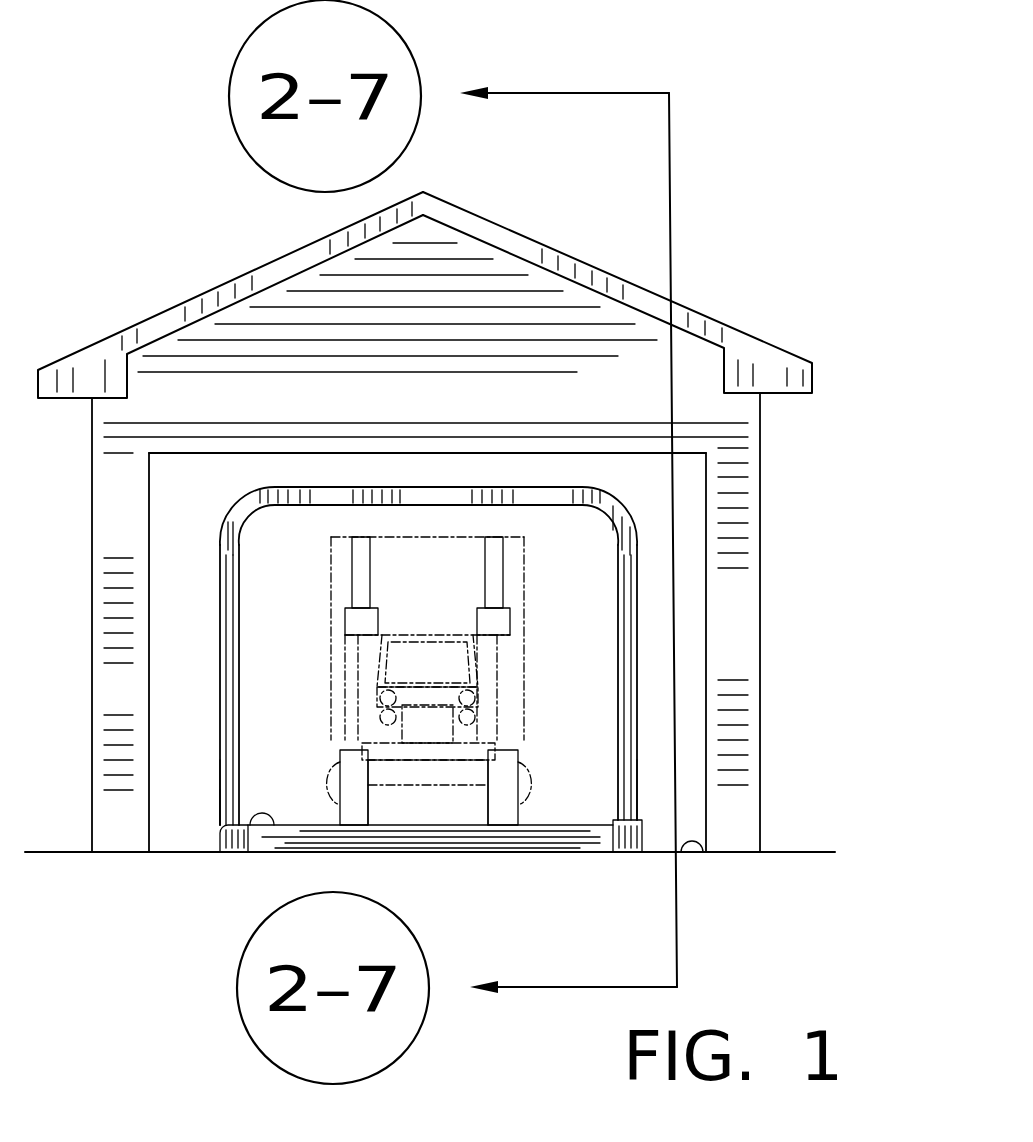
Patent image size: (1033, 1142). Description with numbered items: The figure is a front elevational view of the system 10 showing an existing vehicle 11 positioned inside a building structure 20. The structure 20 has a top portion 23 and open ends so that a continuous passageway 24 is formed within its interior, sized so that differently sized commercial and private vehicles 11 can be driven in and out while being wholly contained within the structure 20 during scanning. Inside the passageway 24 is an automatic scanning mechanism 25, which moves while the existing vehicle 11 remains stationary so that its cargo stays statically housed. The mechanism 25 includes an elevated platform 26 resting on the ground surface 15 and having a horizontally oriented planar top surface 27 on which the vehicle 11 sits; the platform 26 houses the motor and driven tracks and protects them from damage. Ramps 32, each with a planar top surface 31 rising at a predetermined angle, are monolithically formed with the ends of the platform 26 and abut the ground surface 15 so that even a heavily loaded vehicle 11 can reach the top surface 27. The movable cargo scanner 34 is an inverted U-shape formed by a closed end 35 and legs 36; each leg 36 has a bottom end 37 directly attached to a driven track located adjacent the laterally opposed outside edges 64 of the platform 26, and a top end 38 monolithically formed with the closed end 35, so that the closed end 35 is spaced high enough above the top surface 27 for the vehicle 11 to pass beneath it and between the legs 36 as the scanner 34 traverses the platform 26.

The system 10 is at (697, 89).
The existing vehicle 11 is at (525, 561).
The ground surface 15 is at (697, 856).
The building structure 20 is at (92, 364).
The top portion 23 is at (713, 327).
The passageway 24 is at (490, 649).
The automatic scanning mechanism 25 is at (200, 810).
The elevated platform 26 is at (430, 839).
The top surface 27 is at (252, 833).
The top surface of ramp 31 is at (494, 845).
The ramp 32 is at (573, 838).
The movable cargo scanner 34 is at (220, 578).
The closed end 35 is at (552, 493).
The legs 36 is at (232, 674).
The bottom end 37 is at (220, 780).
The top end 38 is at (239, 553).
The laterally opposed outside edges 64 is at (228, 833).